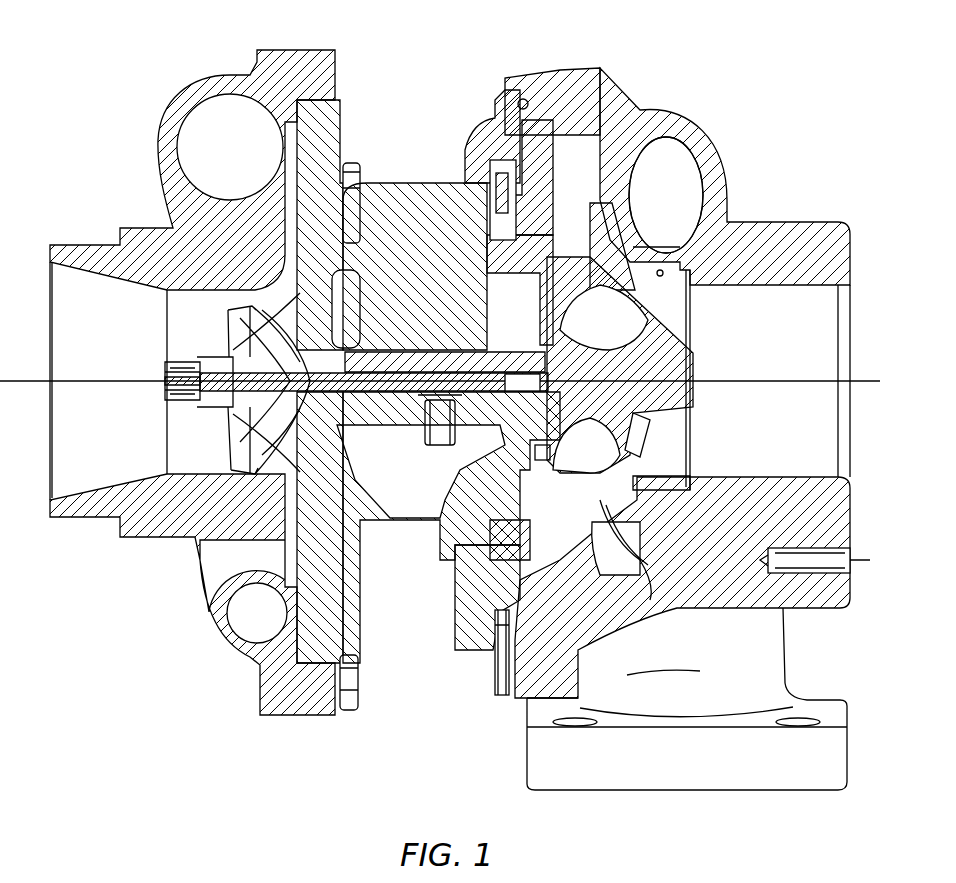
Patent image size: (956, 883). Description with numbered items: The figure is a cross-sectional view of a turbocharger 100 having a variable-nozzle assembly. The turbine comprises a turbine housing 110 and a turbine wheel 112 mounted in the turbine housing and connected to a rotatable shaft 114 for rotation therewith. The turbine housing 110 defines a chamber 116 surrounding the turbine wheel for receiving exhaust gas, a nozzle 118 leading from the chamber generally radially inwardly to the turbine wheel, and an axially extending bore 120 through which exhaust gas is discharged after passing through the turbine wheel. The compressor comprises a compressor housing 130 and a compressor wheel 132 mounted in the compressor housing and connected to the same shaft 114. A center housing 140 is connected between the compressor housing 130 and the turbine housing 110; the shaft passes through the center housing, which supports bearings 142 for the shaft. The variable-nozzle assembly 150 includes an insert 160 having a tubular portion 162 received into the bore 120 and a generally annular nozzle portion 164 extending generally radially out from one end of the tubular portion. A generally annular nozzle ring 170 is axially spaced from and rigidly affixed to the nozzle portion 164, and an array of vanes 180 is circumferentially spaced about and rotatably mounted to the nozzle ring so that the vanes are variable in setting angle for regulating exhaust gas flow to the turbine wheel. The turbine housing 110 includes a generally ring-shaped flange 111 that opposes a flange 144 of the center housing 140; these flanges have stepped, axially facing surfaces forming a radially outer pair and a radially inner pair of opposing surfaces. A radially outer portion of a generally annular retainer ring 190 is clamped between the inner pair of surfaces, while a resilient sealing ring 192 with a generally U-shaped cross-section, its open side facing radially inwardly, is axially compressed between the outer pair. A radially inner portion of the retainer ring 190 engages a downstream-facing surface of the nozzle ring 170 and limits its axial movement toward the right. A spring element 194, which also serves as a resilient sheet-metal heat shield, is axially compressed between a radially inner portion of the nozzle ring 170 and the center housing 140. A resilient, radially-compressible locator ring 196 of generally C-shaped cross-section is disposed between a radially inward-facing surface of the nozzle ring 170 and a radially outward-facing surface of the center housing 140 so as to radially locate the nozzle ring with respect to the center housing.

The turbocharger 100 is at (164, 89).
The turbine housing 110 is at (677, 123).
The flange 111 is at (533, 82).
The turbine wheel 112 is at (622, 365).
The rotatable shaft 114 is at (405, 388).
The chamber 116 is at (622, 173).
The nozzle 118 is at (574, 508).
The bore 120 is at (725, 477).
The compressor housing 130 is at (147, 252).
The compressor wheel 132 is at (253, 412).
The center housing 140 is at (353, 517).
The bearings 142 is at (380, 407).
The flange 144 is at (502, 130).
The variable-nozzle assembly 150 is at (494, 590).
The insert 160 is at (619, 550).
The tubular portion 162 is at (640, 477).
The nozzle portion 164 is at (603, 237).
The nozzle ring 170 is at (527, 553).
The vanes 180 is at (567, 490).
The retainer ring 190 is at (537, 159).
The sealing ring 192 is at (527, 103).
The spring element 194 is at (543, 452).
The locator ring 196 is at (516, 265).